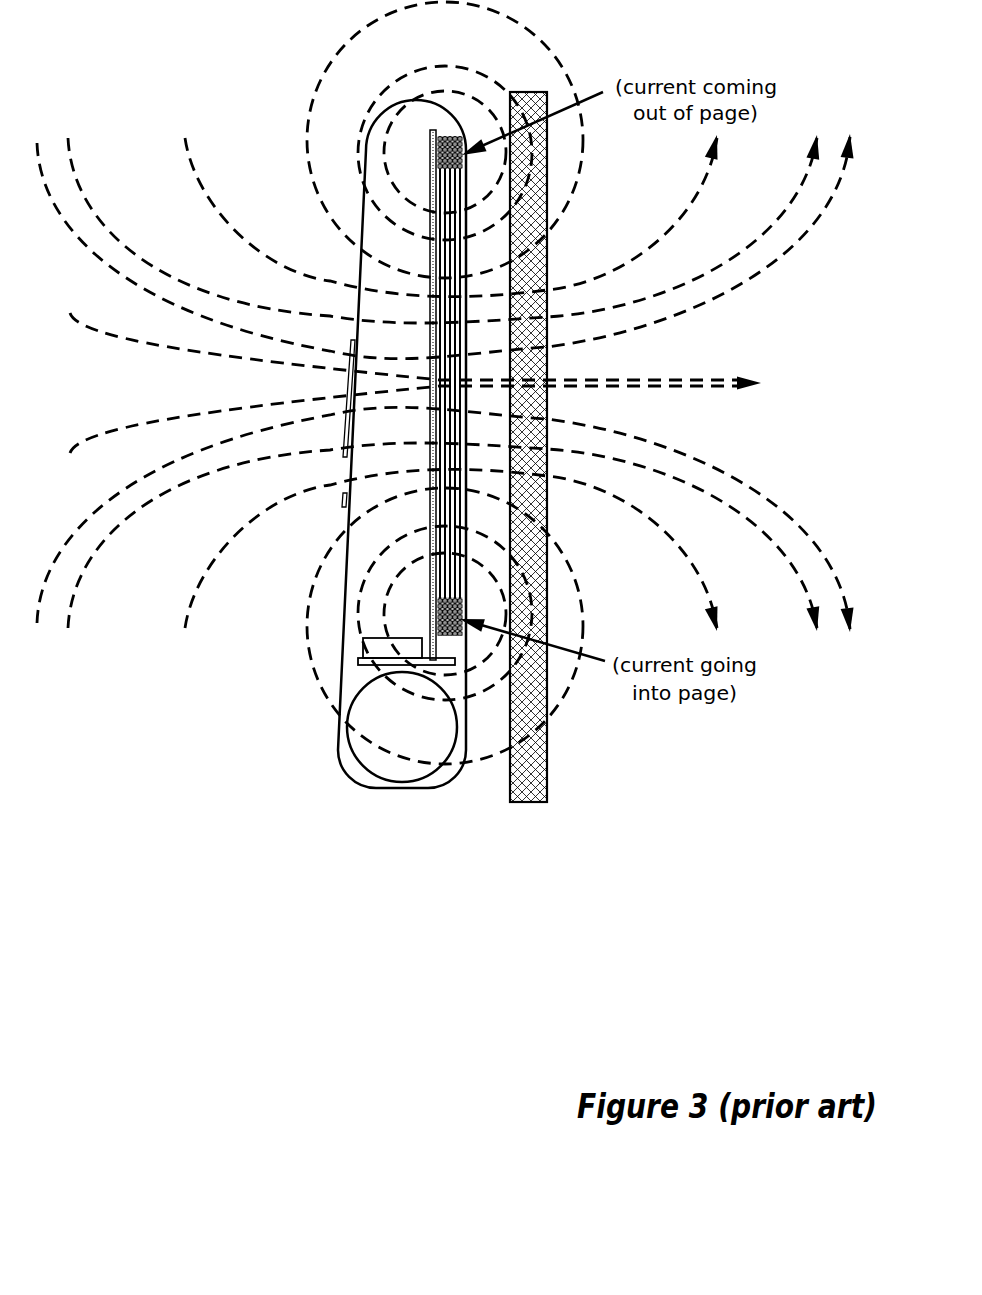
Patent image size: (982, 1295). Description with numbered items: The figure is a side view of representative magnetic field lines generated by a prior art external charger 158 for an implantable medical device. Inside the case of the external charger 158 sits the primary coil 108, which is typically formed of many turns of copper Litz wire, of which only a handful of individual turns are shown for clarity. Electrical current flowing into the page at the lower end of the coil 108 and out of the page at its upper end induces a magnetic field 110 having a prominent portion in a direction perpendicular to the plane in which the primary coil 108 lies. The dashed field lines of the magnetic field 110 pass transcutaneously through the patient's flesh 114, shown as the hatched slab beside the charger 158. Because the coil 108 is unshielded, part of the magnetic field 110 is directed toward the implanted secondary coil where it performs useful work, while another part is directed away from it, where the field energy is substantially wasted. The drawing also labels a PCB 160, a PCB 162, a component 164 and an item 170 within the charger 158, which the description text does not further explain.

The primary coil 108 is at (447, 137).
The magnetic field 110 is at (724, 328).
The patient's flesh 114 is at (544, 803).
The external charger 158 is at (398, 808).
The PCB 160 is at (430, 177).
The PCB 162 is at (363, 658).
The battery 164 is at (420, 737).
The coil end / core 170 is at (404, 616).